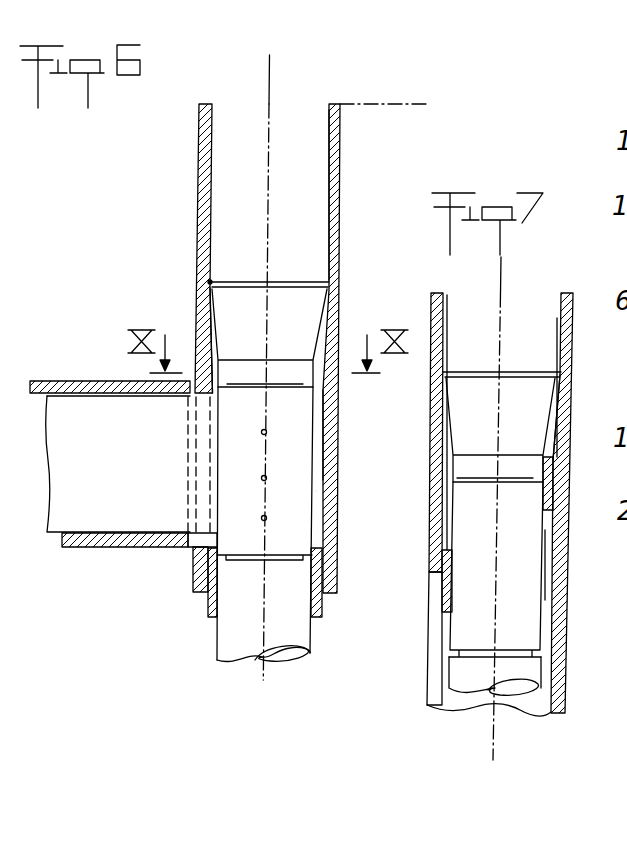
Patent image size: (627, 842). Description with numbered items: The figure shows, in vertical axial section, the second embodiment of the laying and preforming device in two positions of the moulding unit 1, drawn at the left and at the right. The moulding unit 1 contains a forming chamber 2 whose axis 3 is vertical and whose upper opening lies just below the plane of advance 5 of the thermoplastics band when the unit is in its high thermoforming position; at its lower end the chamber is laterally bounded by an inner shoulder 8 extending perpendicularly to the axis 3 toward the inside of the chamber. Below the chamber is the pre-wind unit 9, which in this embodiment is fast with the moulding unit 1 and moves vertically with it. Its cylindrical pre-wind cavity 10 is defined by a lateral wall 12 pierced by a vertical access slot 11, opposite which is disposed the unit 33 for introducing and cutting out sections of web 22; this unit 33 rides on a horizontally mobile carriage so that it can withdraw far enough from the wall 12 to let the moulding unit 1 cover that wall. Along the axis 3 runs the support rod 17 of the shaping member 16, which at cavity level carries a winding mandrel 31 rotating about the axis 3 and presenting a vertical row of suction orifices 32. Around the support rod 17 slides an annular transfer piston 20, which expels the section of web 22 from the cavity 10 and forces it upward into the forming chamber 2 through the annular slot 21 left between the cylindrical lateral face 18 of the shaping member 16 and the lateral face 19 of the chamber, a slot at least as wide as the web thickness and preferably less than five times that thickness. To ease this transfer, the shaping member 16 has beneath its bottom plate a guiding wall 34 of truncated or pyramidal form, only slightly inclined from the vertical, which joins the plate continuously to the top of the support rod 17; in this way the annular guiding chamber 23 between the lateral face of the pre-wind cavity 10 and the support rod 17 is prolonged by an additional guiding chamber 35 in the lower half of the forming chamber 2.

In FIG. 6, the moulding unit 1 is at (199, 158).
In FIG. 7, the moulding unit 1 is at (566, 357).
In FIG. 6, the forming chamber 2 is at (320, 183).
In FIG. 6, the axis 3 is at (268, 61).
In FIG. 7, the axis 3 is at (501, 258).
In FIG. 6, the plane of advance 5 is at (414, 103).
In FIG. 6, the inner shoulder 8 is at (210, 280).
In FIG. 6, the pre-wind unit 9 is at (186, 317).
In FIG. 7, the pre-wind unit 9 is at (410, 567).
In FIG. 6, the pre-wind cavity 10 is at (315, 518).
In FIG. 6, the vertical access slot 11 is at (190, 546).
In FIG. 6, the lateral wall 12 is at (328, 464).
In FIG. 6, the shaping member 16 is at (245, 276).
In FIG. 7, the shaping member 16 is at (515, 366).
In FIG. 6, the support rod 17 is at (225, 638).
In FIG. 7, the support rod 17 is at (473, 683).
In FIG. 7, the cylindrical lateral face 18 is at (463, 372).
In FIG. 6, the lateral face of the forming chamber 19 is at (328, 133).
In FIG. 6, the transfer member 20 is at (207, 611).
In FIG. 7, the transfer member 20 is at (442, 602).
In FIG. 7, the annular slot 21 is at (445, 372).
In FIG. 6, the section of web 22 is at (93, 512).
In FIG. 7, the section of web 22 is at (557, 318).
In FIG. 7, the annular guiding chamber 23 is at (547, 617).
In FIG. 6, the winding mandrel 31 is at (296, 417).
In FIG. 7, the winding mandrel 31 is at (518, 568).
In FIG. 6, the suction orifices 32 is at (262, 481).
In FIG. 6, the unit for introducing and cutting out sections of web 33 is at (85, 381).
In FIG. 6, the guiding wall 34 is at (320, 333).
In FIG. 7, the guiding wall 34 is at (447, 392).
In FIG. 7, the additional guiding chamber 35 is at (442, 450).